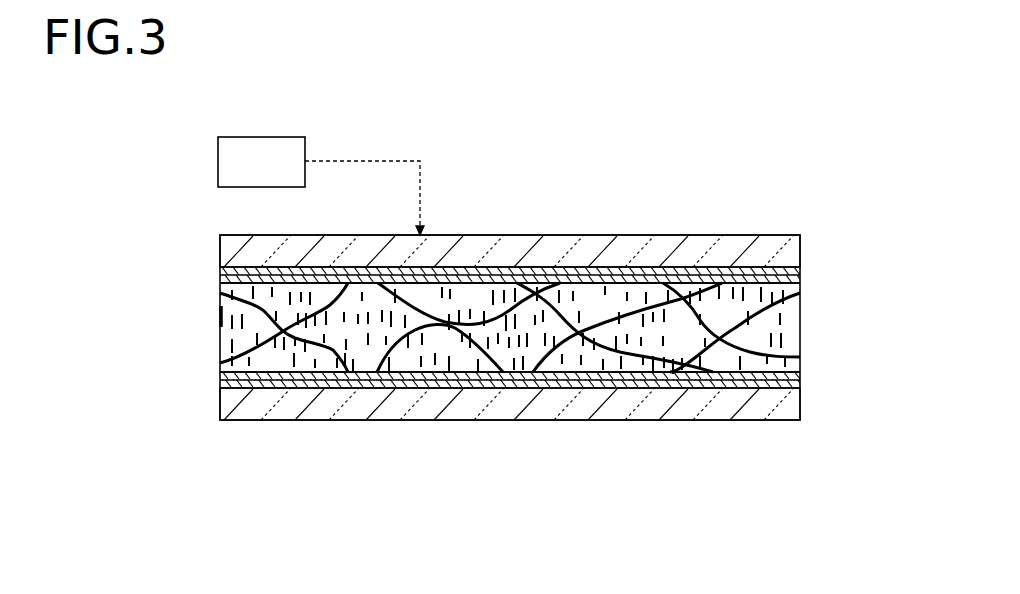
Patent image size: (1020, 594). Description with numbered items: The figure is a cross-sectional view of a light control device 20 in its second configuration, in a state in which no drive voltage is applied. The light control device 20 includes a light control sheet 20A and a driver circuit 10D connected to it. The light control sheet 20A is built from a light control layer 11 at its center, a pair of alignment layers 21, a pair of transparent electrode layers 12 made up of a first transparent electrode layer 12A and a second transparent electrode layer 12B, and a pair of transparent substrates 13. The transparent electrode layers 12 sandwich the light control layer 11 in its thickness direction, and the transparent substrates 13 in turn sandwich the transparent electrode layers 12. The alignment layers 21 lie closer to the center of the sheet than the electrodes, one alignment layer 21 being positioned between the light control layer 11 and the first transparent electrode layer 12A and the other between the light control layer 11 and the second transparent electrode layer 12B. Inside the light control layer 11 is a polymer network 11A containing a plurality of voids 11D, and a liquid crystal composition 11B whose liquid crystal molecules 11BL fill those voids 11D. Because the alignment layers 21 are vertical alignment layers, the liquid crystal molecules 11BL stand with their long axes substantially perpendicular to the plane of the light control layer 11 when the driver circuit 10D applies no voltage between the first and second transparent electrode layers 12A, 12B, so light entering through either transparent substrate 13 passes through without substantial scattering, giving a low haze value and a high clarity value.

The light control device 20 is at (860, 83).
The light control sheet 20A is at (885, 233).
The driver circuit 10D is at (218, 162).
The transparent substrates 13 is at (803, 251).
The transparent electrode layers 12 is at (448, 325).
The first transparent electrode layer 12A is at (220, 271).
The second transparent electrode layer 12B is at (220, 384).
The alignment layers 21 is at (803, 279).
The light control layer 11 is at (221, 333).
The polymer network 11A is at (331, 297).
The liquid crystal composition 11B is at (561, 365).
The voids 11D is at (341, 357).
The liquid crystal molecules 11BL is at (652, 301).